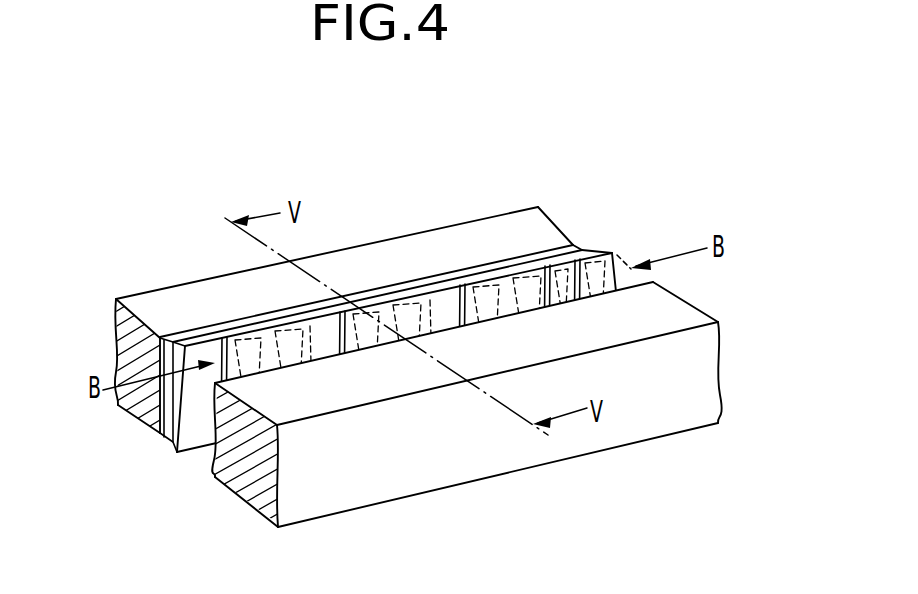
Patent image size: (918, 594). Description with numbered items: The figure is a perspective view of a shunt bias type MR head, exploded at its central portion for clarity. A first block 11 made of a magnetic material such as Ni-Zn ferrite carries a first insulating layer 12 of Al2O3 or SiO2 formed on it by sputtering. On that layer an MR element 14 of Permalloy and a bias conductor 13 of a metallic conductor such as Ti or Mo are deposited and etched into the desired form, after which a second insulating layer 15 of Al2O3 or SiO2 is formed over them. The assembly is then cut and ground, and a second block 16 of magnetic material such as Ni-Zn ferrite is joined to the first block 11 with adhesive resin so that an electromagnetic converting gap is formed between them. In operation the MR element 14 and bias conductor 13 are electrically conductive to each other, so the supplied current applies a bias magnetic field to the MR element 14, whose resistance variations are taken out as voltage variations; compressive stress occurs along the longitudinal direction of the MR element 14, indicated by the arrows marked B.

The first block 11 is at (444, 247).
The first insulating layer 12 is at (553, 247).
The bias conductor 13 is at (608, 252).
The MR element 14 is at (585, 248).
The second insulating layer 15 is at (178, 332).
The second block 16 is at (692, 312).